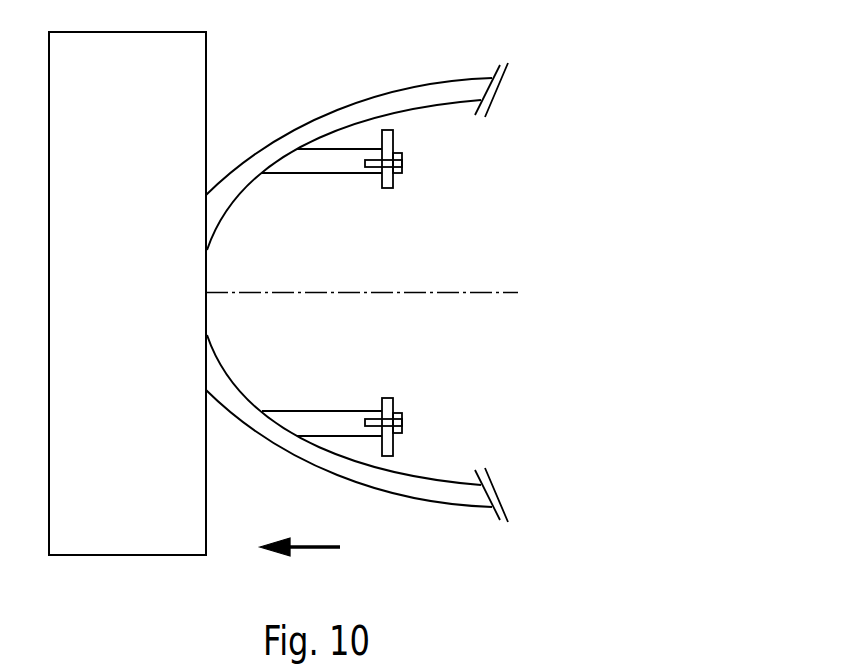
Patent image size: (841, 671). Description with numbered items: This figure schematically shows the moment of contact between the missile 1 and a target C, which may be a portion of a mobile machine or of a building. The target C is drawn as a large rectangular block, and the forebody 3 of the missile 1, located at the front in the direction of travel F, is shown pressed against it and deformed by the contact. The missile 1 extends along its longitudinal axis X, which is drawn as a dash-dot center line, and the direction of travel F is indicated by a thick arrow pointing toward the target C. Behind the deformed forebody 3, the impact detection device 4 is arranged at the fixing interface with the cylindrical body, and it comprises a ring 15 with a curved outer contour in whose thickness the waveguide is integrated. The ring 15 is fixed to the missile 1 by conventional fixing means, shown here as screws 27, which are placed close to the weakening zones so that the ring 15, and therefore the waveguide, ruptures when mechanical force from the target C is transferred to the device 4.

The missile 1 is at (405, 70).
The forebody 3 is at (239, 121).
The impact detection device 4 is at (414, 200).
The ring 15 is at (393, 140).
The screws 27 is at (402, 163).
The target C is at (129, 556).
The direction of travel F is at (310, 549).
The longitudinal axis X is at (364, 277).